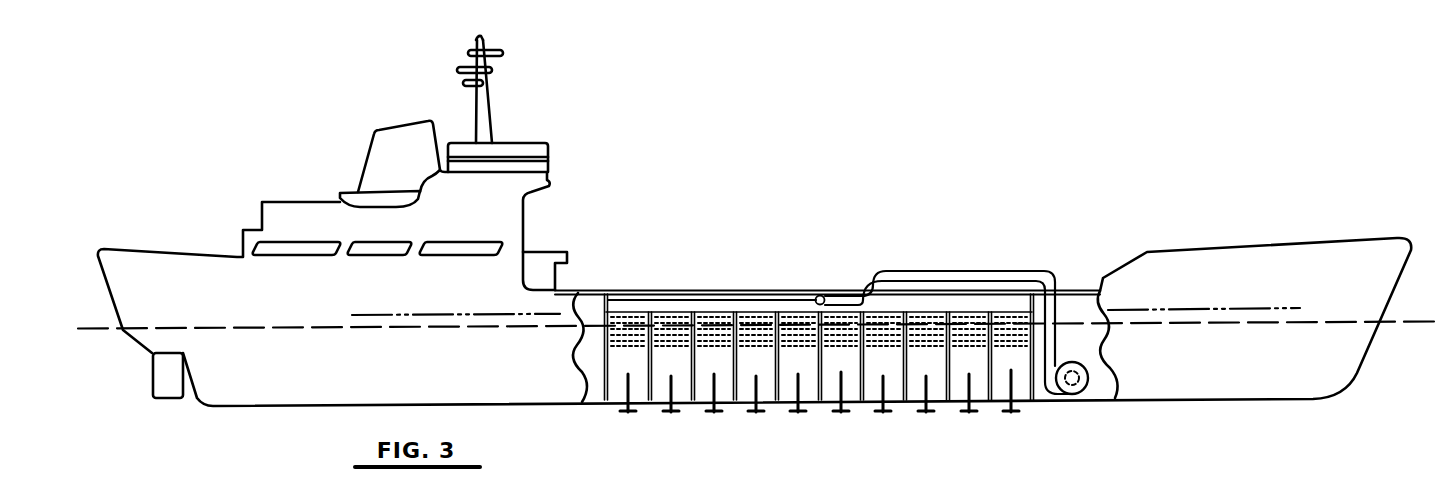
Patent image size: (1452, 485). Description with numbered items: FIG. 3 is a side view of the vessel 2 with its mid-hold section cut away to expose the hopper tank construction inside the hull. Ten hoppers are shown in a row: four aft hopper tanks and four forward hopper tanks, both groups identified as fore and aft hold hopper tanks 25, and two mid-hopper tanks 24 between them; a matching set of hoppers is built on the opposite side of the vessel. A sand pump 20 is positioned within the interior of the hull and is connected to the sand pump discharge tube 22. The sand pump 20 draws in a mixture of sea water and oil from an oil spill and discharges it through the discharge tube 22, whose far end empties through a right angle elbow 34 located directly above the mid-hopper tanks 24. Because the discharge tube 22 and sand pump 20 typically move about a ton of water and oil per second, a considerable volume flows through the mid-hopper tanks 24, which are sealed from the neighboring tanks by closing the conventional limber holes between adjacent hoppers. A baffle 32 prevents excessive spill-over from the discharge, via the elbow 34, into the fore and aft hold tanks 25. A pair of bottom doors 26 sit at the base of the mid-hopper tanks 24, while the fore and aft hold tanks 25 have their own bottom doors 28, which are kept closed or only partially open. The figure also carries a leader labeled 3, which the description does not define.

The vessel 2 is at (941, 157).
The deck 3 is at (693, 289).
The sand pump 20 is at (1087, 398).
The sand pump discharge tube 22 is at (952, 268).
The mid-hopper tanks 24 is at (798, 375).
The fore and aft hold hopper tanks 25 is at (670, 310).
The bottom doors 26 is at (795, 414).
The bottom doors 28 is at (632, 414).
The baffle 32 is at (776, 303).
The right angle elbow 34 is at (820, 294).